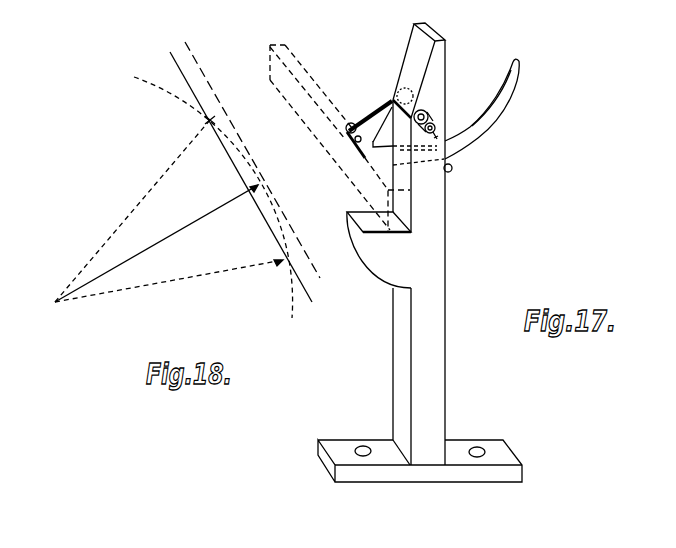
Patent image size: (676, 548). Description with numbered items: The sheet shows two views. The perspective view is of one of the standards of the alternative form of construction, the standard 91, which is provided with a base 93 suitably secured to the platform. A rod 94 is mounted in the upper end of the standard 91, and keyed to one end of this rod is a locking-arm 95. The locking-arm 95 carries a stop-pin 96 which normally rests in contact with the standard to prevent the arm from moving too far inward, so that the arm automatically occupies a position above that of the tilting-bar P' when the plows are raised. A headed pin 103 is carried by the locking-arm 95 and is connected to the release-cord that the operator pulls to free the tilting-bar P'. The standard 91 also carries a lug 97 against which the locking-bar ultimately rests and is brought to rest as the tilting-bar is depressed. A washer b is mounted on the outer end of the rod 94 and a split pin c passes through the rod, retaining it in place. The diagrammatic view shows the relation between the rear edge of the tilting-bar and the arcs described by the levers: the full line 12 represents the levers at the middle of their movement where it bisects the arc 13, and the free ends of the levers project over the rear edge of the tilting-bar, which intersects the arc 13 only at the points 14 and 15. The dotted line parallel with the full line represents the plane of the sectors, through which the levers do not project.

In FIG. 17, the standard 91 is at (419, 244).
In FIG. 17, the lug 97 is at (379, 250).
In FIG. 17, the base 93 is at (462, 447).
In FIG. 17, the headed pin 103 is at (349, 124).
In FIG. 17, the locking-arm 95 is at (365, 158).
In FIG. 17, the washer b is at (430, 115).
In FIG. 17, the split pin c is at (437, 128).
In FIG. 17, the rod 94 is at (477, 131).
In FIG. 17, the stop-pin 96 is at (452, 168).
In FIG. 17, the tilting-bar P' is at (340, 138).
In FIG. 18, the line 12 is at (179, 233).
In FIG. 18, the arc 13 is at (256, 188).
In FIG. 18, the point 14 is at (281, 263).
In FIG. 18, the point 15 is at (207, 120).